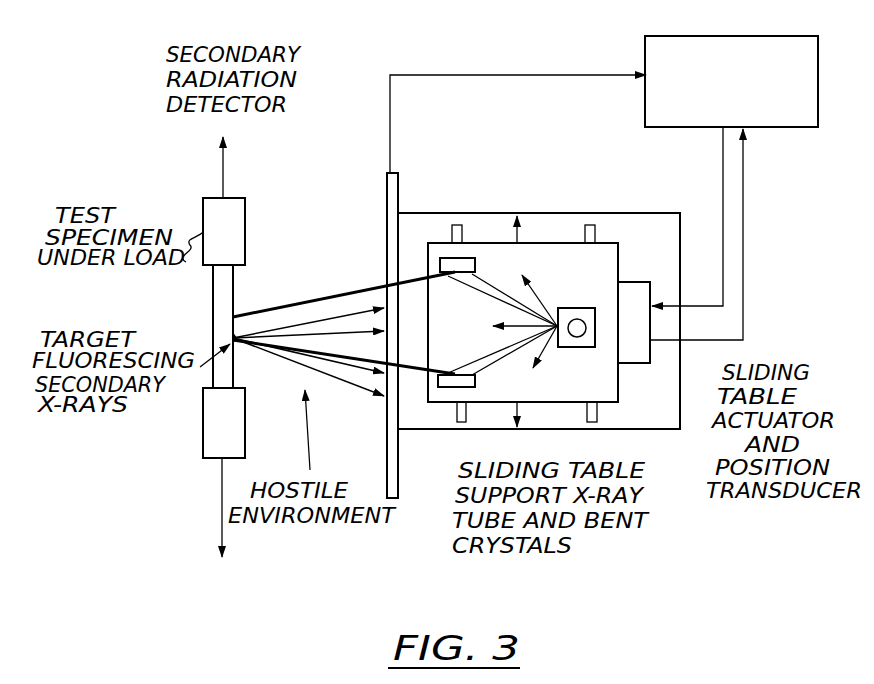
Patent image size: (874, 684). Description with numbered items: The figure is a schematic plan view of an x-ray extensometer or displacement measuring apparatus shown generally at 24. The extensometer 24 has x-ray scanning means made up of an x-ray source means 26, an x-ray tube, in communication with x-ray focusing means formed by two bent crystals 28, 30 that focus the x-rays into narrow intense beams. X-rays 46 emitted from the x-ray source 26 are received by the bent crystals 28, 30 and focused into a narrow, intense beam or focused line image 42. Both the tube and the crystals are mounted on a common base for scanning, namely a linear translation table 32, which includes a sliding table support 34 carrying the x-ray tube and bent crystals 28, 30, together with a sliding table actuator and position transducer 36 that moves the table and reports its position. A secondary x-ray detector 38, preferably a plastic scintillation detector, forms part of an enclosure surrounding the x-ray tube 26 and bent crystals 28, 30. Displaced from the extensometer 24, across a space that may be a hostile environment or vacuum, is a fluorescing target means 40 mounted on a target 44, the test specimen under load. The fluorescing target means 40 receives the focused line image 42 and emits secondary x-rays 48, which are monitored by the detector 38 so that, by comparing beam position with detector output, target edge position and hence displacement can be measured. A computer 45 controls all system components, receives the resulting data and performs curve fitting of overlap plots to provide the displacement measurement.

The x-ray extensometer 24 is at (513, 149).
The x-ray source means 26 is at (592, 308).
The bent crystal 28 is at (450, 258).
The bent crystal 30 is at (448, 388).
The linear translation table 32 is at (512, 214).
The sliding table support 34 is at (484, 406).
The sliding table actuator and position transducer 36 is at (656, 366).
The secondary x-ray detector 38 is at (386, 186).
The fluorescing target means 40 is at (236, 344).
The focused line image 42 is at (332, 318).
The target 44 is at (235, 289).
The computer 45 is at (778, 128).
The x-rays 46 is at (485, 279).
The secondary x-rays 48 is at (361, 291).